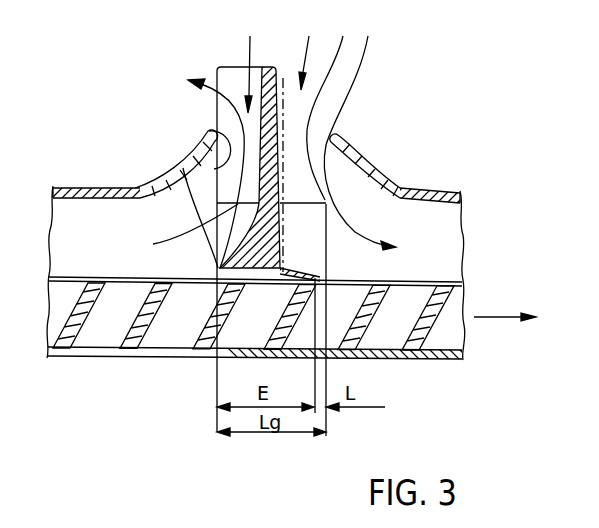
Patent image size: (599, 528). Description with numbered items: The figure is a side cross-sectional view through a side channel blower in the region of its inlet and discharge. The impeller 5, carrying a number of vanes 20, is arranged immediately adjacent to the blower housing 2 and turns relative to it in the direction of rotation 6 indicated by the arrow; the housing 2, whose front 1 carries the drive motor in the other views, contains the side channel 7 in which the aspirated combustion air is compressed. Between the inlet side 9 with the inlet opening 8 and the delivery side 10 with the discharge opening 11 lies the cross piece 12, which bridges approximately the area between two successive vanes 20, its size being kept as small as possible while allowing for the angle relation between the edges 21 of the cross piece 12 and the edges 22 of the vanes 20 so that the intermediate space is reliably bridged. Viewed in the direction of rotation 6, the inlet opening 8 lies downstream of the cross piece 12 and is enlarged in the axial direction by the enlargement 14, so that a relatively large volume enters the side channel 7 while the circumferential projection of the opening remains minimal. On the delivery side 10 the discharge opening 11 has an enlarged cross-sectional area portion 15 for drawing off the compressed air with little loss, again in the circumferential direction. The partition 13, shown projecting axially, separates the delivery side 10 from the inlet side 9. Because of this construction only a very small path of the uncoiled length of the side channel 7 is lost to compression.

The front 1 is at (420, 190).
The blower housing 2 is at (442, 194).
The impeller 5 is at (441, 360).
The direction of rotation 6 is at (490, 318).
The side channel 7 is at (443, 230).
The inlet opening 8 is at (327, 105).
The inlet side 9 is at (308, 50).
The delivery side 10 is at (250, 62).
The discharge opening 11 is at (221, 66).
The cross piece 12 is at (215, 320).
The partition 13 is at (283, 78).
The enlargement 14 is at (360, 223).
The enlarged cross-sectional area portion 15 is at (220, 125).
The vanes 20 is at (426, 332).
The edges of the cross piece 21 is at (180, 182).
The edges of the vanes 22 is at (113, 360).